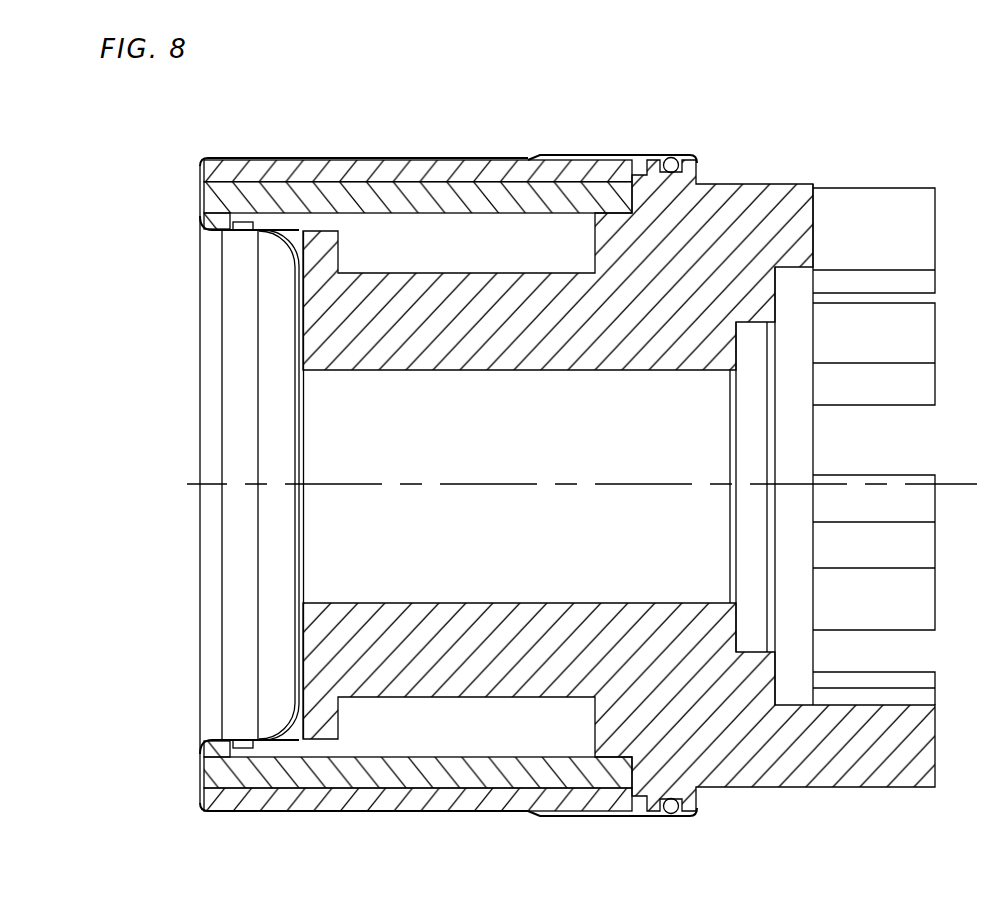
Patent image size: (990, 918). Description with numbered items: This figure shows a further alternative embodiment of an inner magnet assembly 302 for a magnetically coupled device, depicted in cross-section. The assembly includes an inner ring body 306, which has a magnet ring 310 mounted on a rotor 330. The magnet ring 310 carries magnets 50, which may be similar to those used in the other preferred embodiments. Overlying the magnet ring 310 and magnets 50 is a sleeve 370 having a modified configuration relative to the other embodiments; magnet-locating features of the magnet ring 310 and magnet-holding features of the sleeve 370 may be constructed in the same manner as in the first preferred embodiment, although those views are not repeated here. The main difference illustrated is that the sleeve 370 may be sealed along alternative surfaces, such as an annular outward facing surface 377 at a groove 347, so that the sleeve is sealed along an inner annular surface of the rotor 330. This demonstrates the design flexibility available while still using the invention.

The inner magnet assembly 302 is at (70, 178).
The inner ring body 306 is at (732, 183).
The magnet ring 310 is at (415, 190).
The rotor 330 is at (792, 205).
The groove 347 is at (242, 748).
The sleeve 370 is at (337, 157).
The annular outward facing surface 377 is at (205, 736).
The magnets 50 is at (530, 158).